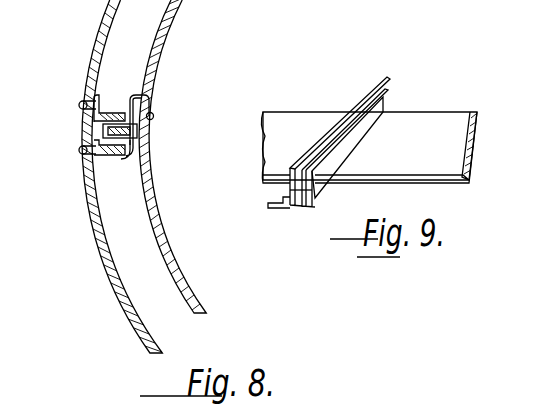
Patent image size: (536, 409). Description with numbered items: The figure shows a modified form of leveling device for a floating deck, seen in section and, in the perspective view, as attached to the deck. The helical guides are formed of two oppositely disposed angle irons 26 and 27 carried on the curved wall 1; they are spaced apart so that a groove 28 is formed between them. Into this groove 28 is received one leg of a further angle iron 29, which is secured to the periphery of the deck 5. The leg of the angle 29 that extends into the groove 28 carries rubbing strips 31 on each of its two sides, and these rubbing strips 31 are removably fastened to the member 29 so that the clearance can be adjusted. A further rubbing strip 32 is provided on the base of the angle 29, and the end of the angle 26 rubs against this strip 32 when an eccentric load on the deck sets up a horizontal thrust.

In FIG. 8, the outer wall 1 is at (88, 70).
In FIG. 8, the inner panel 5 is at (158, 52).
In FIG. 9, the inner panel 5 is at (417, 122).
In FIG. 8, the angle iron 26 is at (96, 100).
In FIG. 8, the angle iron 27 is at (104, 152).
In FIG. 8, the groove 28 is at (95, 133).
In FIG. 8, the angle iron 29 is at (138, 133).
In FIG. 9, the angle iron 29 is at (291, 210).
In FIG. 8, the rubbing strips 31 is at (130, 150).
In FIG. 9, the rubbing strips 31 is at (357, 100).
In FIG. 8, the rubbing strip 32 is at (142, 97).
In FIG. 9, the rubbing strip 32 is at (288, 189).